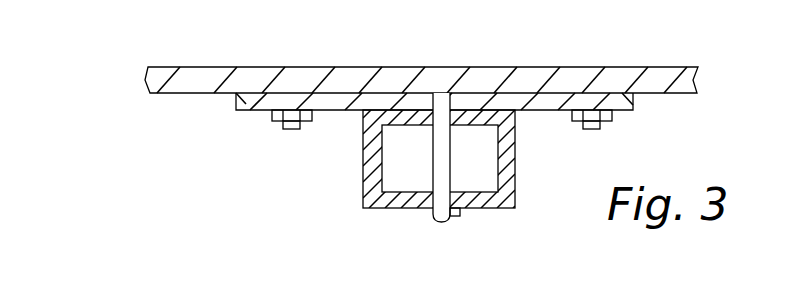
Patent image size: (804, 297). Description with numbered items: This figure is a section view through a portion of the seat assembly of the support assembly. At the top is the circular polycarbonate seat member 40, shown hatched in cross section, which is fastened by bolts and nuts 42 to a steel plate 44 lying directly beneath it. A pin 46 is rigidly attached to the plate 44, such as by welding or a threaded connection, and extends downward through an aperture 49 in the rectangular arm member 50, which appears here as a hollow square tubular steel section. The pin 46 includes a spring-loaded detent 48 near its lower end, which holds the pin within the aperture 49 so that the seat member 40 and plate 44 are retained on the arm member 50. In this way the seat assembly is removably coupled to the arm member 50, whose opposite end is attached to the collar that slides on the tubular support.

The seat member 40 is at (153, 66).
The bolts and nuts 42 is at (597, 130).
The steel plate 44 is at (237, 108).
The pin 46 is at (437, 219).
The spring-loaded detent 48 is at (453, 214).
The aperture 49 is at (431, 110).
The rectangular arm member 50 is at (363, 190).